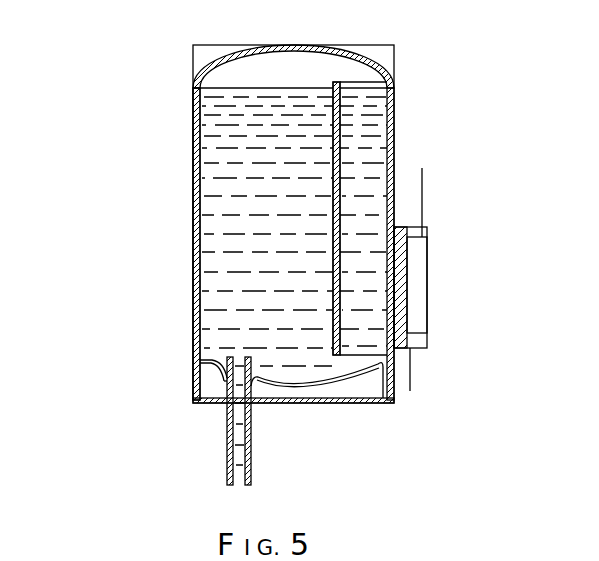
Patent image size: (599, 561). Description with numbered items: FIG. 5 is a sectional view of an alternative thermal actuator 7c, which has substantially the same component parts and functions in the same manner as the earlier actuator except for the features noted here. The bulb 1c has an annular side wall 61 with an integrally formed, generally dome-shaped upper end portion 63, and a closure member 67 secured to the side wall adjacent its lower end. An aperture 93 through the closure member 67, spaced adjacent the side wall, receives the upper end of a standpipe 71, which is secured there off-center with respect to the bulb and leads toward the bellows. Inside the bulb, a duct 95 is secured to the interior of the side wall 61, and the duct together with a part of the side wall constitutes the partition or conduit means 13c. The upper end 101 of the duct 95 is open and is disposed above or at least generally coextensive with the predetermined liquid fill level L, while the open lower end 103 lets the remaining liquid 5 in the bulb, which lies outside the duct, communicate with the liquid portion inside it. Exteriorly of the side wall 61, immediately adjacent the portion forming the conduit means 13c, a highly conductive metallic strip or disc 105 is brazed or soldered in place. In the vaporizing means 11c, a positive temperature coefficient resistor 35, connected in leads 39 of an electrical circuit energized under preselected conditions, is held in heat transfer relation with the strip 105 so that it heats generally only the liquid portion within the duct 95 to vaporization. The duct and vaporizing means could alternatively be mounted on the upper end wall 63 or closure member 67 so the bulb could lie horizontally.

The bulb 1c is at (186, 250).
The thermal actuator 7c is at (160, 90).
The side wall 61 is at (192, 173).
The upper end portion 63 is at (275, 44).
The predetermined liquid fill level L is at (258, 89).
The liquid 5 is at (215, 317).
The duct 95 is at (333, 228).
The partition or conduit means 13c is at (326, 297).
The upper end of duct 101 is at (354, 82).
The lower end of duct 103 is at (352, 356).
The metallic strip or disc 105 is at (403, 312).
The positive temperature coefficient resistor 35 is at (420, 283).
The leads 39 is at (422, 176).
The vaporizing means 11c is at (443, 248).
The standpipe 71 is at (252, 450).
The closure member 67 is at (303, 385).
The aperture 93 is at (222, 383).